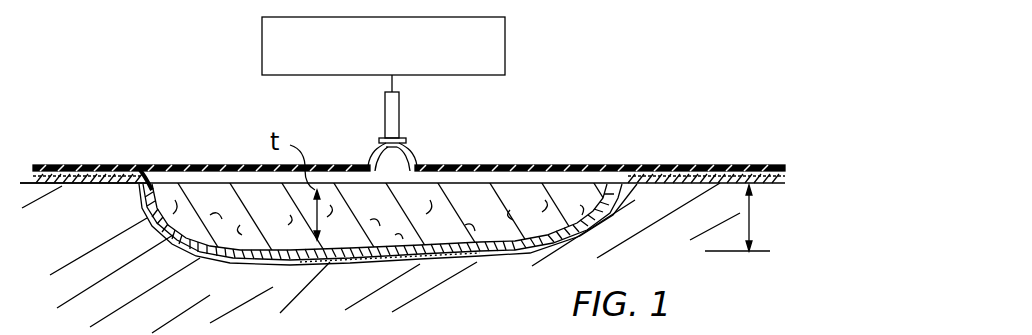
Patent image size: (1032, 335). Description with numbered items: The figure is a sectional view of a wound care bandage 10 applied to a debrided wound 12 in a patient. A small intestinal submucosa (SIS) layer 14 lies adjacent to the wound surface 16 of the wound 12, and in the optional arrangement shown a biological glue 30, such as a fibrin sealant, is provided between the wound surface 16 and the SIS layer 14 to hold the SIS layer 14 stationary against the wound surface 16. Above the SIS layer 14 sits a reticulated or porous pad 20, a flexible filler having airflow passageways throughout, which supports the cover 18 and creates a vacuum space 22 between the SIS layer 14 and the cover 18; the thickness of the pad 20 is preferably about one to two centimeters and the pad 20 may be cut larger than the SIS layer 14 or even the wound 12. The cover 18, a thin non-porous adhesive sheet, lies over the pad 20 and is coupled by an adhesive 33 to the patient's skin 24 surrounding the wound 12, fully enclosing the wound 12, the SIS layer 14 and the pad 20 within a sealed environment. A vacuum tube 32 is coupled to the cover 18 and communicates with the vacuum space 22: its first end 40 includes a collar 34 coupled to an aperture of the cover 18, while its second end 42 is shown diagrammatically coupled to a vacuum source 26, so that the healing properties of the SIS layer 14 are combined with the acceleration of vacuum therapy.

The wound care bandage 10 is at (568, 166).
The debrided wound 12 is at (608, 192).
The small intestinal submucosa (SIS) layer 14 is at (152, 236).
The wound surface 16 is at (497, 250).
The cover 18 is at (192, 165).
The reticulated or porous pad 20 is at (494, 184).
The vacuum space 22 is at (150, 183).
The skin 24 is at (58, 186).
The vacuum source 26 is at (505, 56).
The biological glue 30 is at (246, 260).
The vacuum tube 32 is at (399, 113).
The adhesive 33 is at (77, 173).
The collar 34 is at (408, 142).
The first end 40 is at (388, 131).
The second end 42 is at (392, 80).